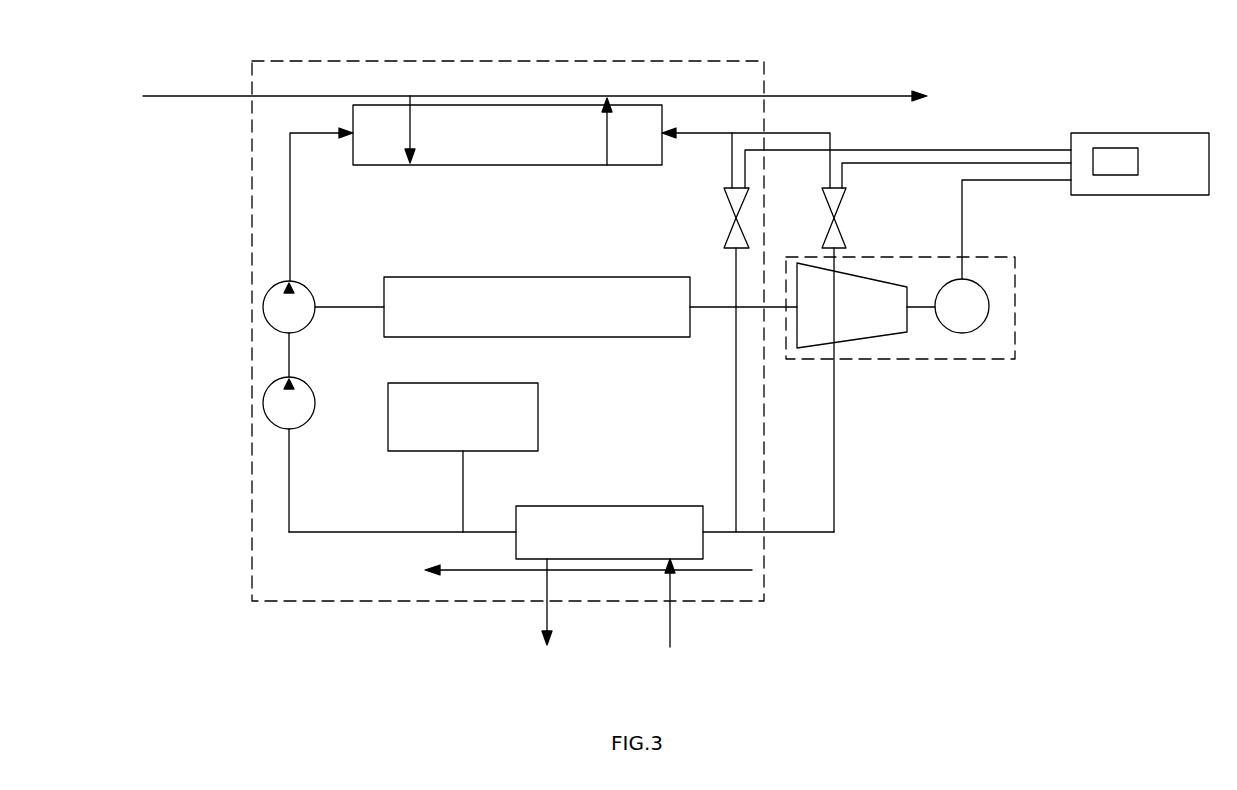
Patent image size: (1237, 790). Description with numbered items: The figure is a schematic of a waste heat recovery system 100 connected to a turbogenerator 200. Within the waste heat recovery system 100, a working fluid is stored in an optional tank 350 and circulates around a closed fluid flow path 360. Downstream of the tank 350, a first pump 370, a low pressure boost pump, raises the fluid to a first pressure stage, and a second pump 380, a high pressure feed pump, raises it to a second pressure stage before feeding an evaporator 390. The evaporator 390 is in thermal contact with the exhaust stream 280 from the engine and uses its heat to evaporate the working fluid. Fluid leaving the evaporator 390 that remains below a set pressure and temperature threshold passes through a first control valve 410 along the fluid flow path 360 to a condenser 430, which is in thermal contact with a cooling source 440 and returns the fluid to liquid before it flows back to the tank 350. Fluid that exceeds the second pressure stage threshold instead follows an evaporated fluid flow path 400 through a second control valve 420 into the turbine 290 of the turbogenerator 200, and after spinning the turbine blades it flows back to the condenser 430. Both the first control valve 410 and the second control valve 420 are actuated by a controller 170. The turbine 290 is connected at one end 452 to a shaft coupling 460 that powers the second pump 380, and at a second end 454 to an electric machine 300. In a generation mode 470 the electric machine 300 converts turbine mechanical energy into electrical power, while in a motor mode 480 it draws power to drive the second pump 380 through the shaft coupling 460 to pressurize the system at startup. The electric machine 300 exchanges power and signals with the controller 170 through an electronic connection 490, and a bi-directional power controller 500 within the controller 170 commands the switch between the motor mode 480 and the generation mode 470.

The waste heat recovery system 100 is at (305, 61).
The controller 170 is at (1140, 133).
The turbogenerator 200 is at (1015, 327).
The exhaust stream 280 is at (213, 96).
The turbine 290 is at (812, 305).
The electric machine 300 is at (985, 295).
The tank 350 is at (463, 457).
The fluid flow path 360 is at (387, 532).
The first pump 370 is at (263, 401).
The second pump 380 is at (263, 305).
The evaporator 390 is at (476, 188).
The evaporated fluid flow path 400 is at (817, 133).
The first control valve 410 is at (726, 200).
The second control valve 420 is at (846, 210).
The condenser 430 is at (675, 576).
The cooling source 440 is at (713, 570).
The one end 452 is at (663, 337).
The second end 454 is at (410, 337).
The shaft coupling 460 is at (537, 307).
The generation mode 470 is at (970, 330).
The motor mode 480 is at (952, 330).
The electronic connection 490 is at (962, 240).
The bi-directional power controller 500 is at (1115, 175).